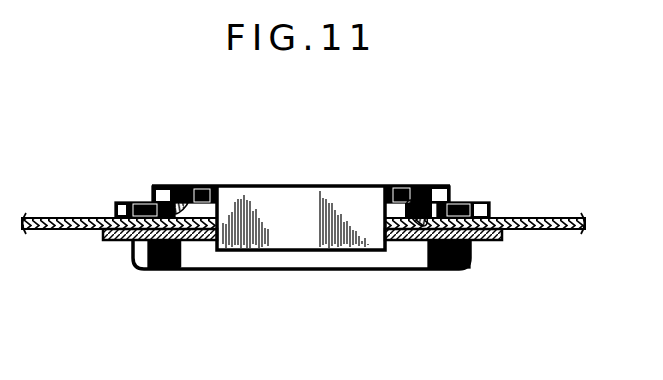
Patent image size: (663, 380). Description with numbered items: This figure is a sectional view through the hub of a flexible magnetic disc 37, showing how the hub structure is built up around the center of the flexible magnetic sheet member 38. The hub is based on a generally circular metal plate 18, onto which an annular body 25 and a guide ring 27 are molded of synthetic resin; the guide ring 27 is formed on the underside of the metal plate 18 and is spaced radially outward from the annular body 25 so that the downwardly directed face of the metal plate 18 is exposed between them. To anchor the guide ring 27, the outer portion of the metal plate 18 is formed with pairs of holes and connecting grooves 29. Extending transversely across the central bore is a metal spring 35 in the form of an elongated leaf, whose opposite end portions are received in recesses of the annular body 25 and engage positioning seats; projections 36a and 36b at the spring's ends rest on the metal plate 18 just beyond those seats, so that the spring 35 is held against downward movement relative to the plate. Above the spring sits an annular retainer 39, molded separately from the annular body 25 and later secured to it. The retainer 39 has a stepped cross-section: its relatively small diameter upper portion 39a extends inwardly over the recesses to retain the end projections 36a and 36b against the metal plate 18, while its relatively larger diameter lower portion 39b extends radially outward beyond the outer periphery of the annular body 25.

The flexible magnetic disc 37 is at (505, 138).
The flexible magnetic sheet member 38 is at (520, 217).
The circular metal plate 18 is at (403, 240).
The metal spring 35 is at (320, 187).
The projection 36a is at (200, 240).
The projection 36b is at (386, 187).
The connecting grooves 29 is at (132, 194).
The annular retainer 39 is at (200, 173).
The upper portion of annular retainer 39a is at (450, 169).
The lower portion of annular retainer 39b is at (473, 192).
The annular body 25 is at (186, 188).
The guide ring 27 is at (433, 266).